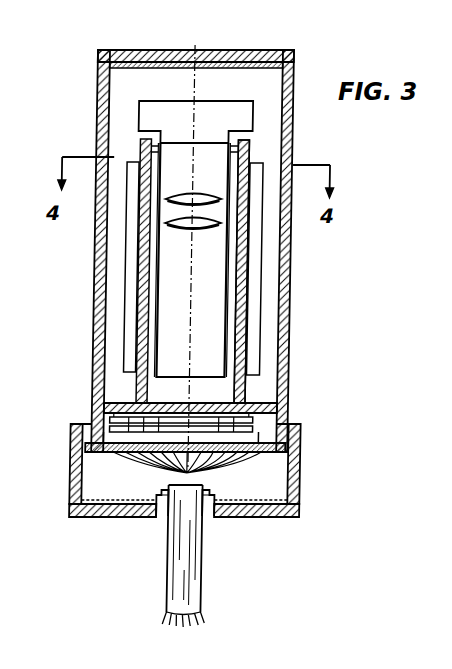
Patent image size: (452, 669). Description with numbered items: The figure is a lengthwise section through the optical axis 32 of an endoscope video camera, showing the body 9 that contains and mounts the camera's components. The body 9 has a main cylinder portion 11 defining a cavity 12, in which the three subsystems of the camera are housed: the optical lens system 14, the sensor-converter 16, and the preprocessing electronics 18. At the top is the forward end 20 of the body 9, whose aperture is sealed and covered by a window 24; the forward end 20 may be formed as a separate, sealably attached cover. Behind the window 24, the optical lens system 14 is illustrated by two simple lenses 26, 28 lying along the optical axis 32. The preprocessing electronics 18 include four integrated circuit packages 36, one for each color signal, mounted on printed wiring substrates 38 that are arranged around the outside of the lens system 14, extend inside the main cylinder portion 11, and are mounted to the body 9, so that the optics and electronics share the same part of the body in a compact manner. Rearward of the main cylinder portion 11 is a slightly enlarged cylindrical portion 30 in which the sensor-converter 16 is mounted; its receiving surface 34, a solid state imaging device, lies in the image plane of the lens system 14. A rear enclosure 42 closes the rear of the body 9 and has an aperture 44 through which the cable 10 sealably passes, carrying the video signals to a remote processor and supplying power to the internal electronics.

The body 9 is at (99, 326).
The cable 10 is at (210, 584).
The main cylinder portion 11 is at (294, 293).
The cavity 12 is at (259, 113).
The optical lens system 14 is at (140, 106).
The sensor-converter 16 is at (122, 442).
The preprocessing electronics 18 is at (264, 160).
The forward end 20 is at (98, 50).
The window 24 is at (225, 61).
The lens 26 is at (168, 201).
The lens 28 is at (170, 225).
The cylindrical portion 30 is at (307, 479).
The optical axis 32 is at (194, 47).
The receiving surface 34 is at (279, 412).
The integrated circuit packages 36 is at (130, 348).
The printed wiring substrates 38 is at (251, 385).
The rear enclosure 42 is at (111, 517).
The aperture 44 is at (209, 527).